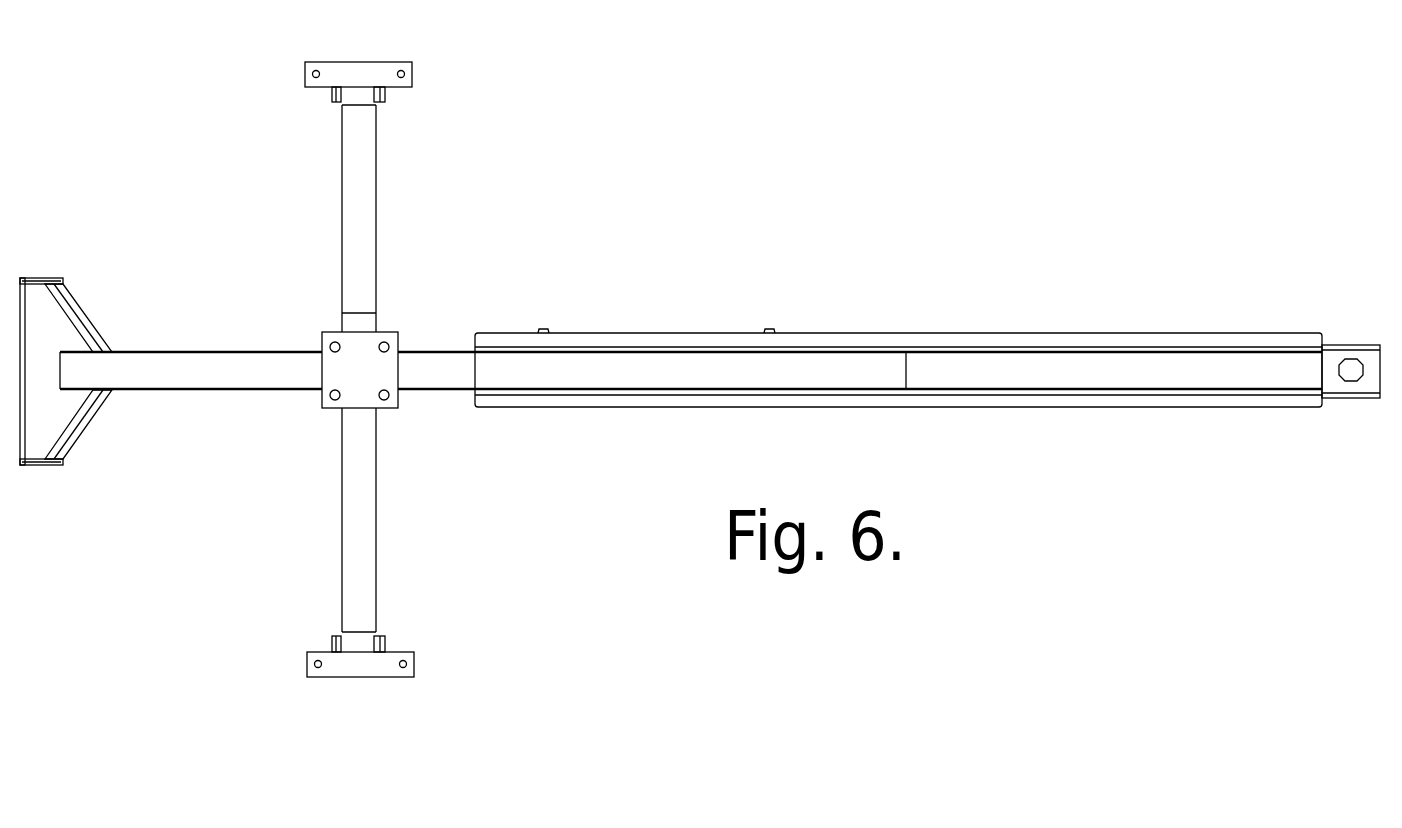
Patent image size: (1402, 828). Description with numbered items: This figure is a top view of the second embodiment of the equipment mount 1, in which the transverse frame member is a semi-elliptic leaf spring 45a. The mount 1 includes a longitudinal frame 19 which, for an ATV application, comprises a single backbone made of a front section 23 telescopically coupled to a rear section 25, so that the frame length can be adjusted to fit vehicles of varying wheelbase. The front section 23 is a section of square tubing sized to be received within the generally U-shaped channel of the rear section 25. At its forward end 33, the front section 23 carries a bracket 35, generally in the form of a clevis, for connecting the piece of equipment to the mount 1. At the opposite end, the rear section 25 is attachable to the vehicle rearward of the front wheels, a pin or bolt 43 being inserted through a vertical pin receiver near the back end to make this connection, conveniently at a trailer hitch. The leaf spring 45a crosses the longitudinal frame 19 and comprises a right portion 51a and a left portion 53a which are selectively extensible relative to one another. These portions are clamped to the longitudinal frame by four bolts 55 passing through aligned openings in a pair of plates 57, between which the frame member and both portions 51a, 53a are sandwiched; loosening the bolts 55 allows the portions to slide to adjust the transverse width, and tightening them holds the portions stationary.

The mount 1 is at (818, 180).
The longitudinal frame 19 is at (710, 331).
The front section 23 is at (196, 350).
The rear section 25 is at (994, 333).
The forward end 33 is at (50, 372).
The bracket 35 is at (43, 280).
The pin or bolt 43 is at (1351, 358).
The semi-elliptic leaf spring 45a is at (379, 223).
The right portion 51a is at (380, 175).
The left portion 53a is at (380, 558).
The bolts 55 is at (331, 351).
The plates 57 is at (390, 332).